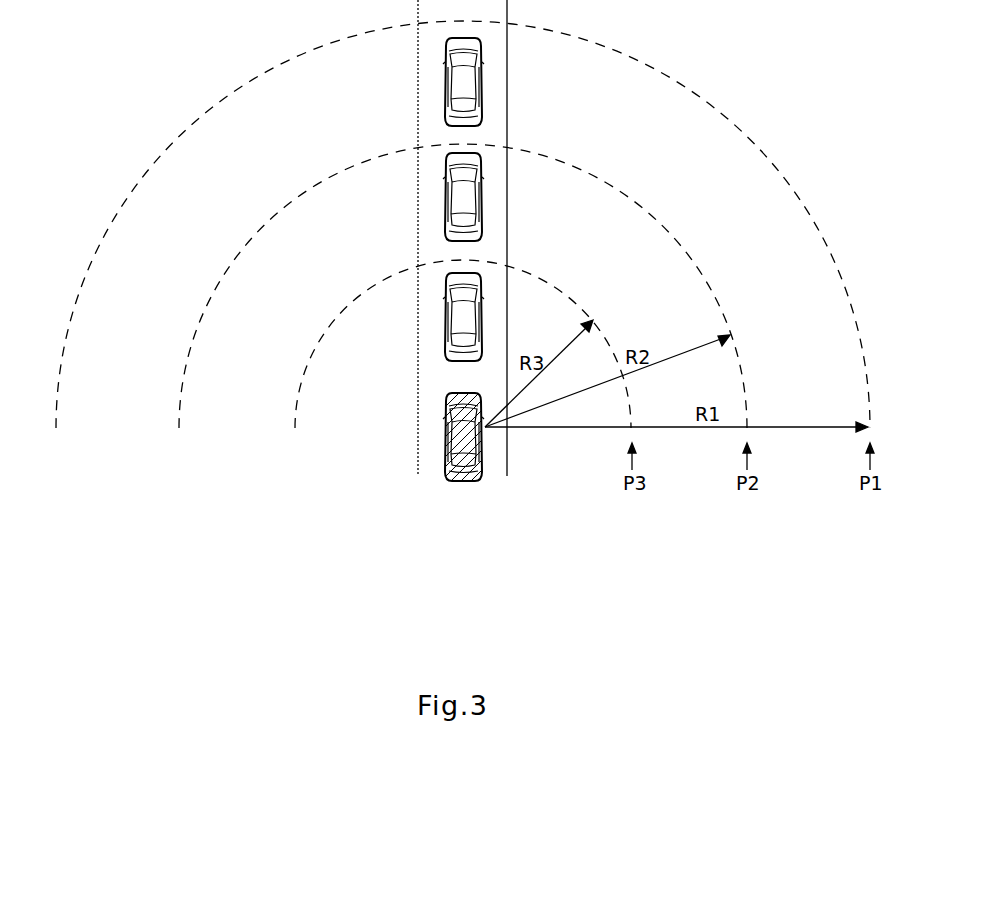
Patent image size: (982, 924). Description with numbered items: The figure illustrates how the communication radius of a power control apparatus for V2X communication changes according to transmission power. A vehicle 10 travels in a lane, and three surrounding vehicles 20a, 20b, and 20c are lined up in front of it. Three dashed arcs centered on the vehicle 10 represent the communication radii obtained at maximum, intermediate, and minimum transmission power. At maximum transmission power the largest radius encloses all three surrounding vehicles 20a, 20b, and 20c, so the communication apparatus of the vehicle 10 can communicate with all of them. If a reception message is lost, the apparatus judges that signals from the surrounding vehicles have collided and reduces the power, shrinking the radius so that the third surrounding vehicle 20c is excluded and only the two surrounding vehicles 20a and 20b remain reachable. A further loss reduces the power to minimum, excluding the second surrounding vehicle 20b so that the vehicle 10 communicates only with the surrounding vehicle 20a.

The vehicle 10 is at (461, 482).
The first surrounding vehicle 20a is at (482, 318).
The second surrounding vehicle 20b is at (482, 201).
The third surrounding vehicle 20c is at (482, 88).